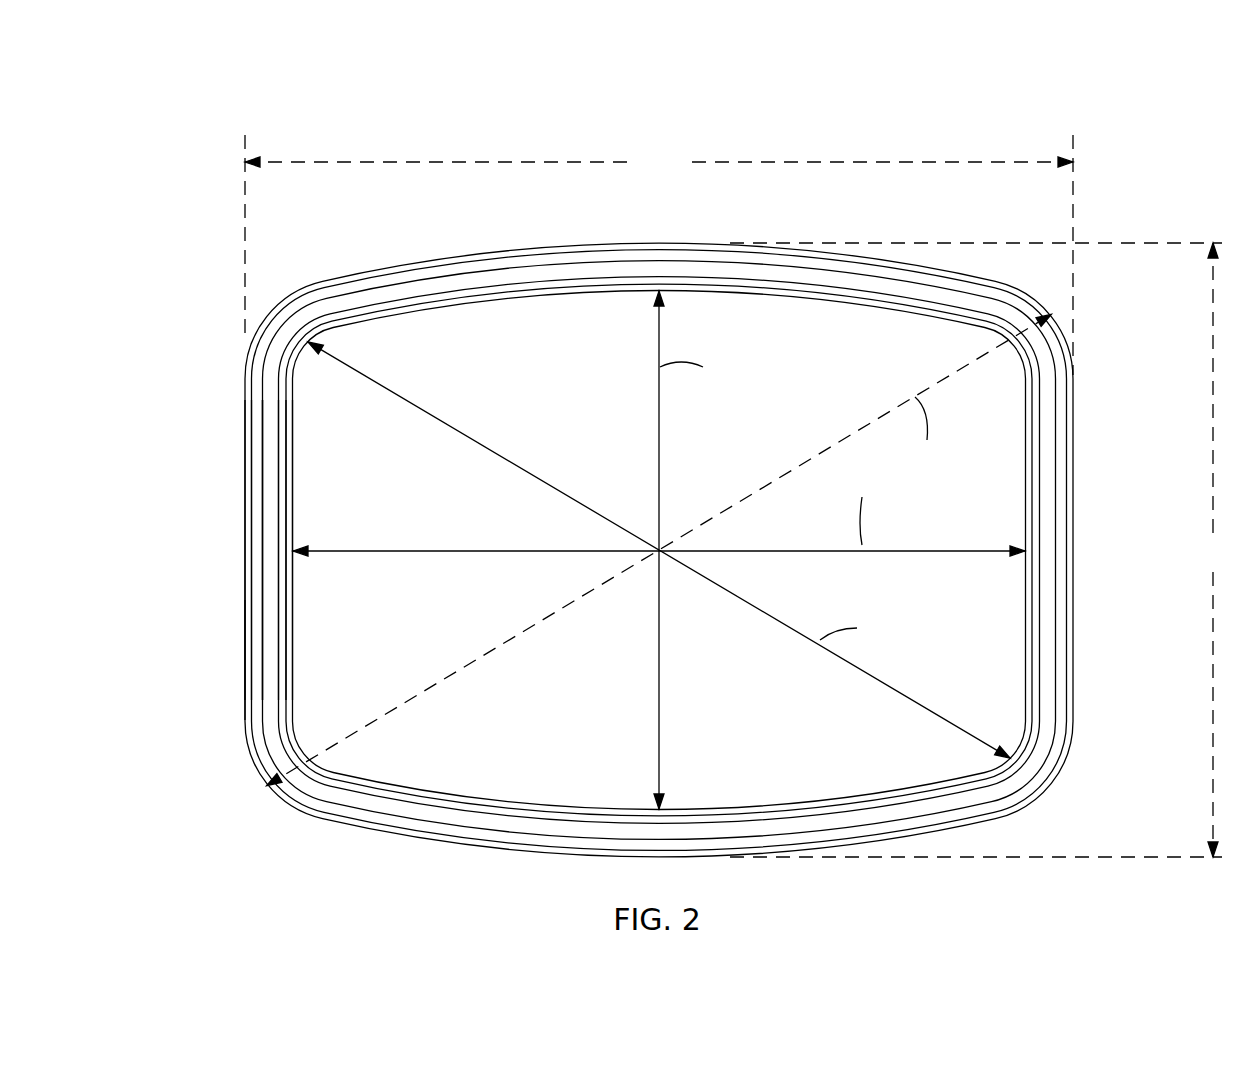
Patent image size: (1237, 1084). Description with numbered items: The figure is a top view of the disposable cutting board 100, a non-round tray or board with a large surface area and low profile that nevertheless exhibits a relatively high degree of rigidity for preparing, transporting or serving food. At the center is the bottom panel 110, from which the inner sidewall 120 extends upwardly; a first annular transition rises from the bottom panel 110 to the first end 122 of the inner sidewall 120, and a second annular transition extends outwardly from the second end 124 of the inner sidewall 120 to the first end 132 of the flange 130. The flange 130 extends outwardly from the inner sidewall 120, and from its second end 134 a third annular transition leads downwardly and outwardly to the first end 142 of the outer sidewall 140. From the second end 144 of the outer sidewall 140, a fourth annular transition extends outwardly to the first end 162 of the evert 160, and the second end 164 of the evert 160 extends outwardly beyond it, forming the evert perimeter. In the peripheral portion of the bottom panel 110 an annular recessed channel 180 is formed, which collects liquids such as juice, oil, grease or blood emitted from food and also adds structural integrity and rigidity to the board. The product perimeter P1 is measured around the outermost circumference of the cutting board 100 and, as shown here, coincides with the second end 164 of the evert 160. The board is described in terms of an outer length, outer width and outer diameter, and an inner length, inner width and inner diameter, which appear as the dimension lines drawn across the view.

The disposable cutting board 100 is at (281, 100).
The bottom panel 110 is at (513, 731).
The inner sidewall 120 is at (283, 467).
The first end of the inner sidewall 122 is at (288, 437).
The second end of the inner sidewall 124 is at (278, 408).
The flange 130 is at (272, 573).
The first end of the flange 132 is at (280, 602).
The second end of the flange 134 is at (263, 632).
The outer sidewall 140 is at (254, 455).
The first end of the outer sidewall 142 is at (251, 427).
The second end of the outer sidewall 144 is at (262, 397).
The evert 160 is at (248, 529).
The first end of the evert 162 is at (252, 557).
The second end of the evert 164 is at (247, 585).
The recessed channel 180 is at (293, 683).
The product perimeter P1 is at (245, 715).